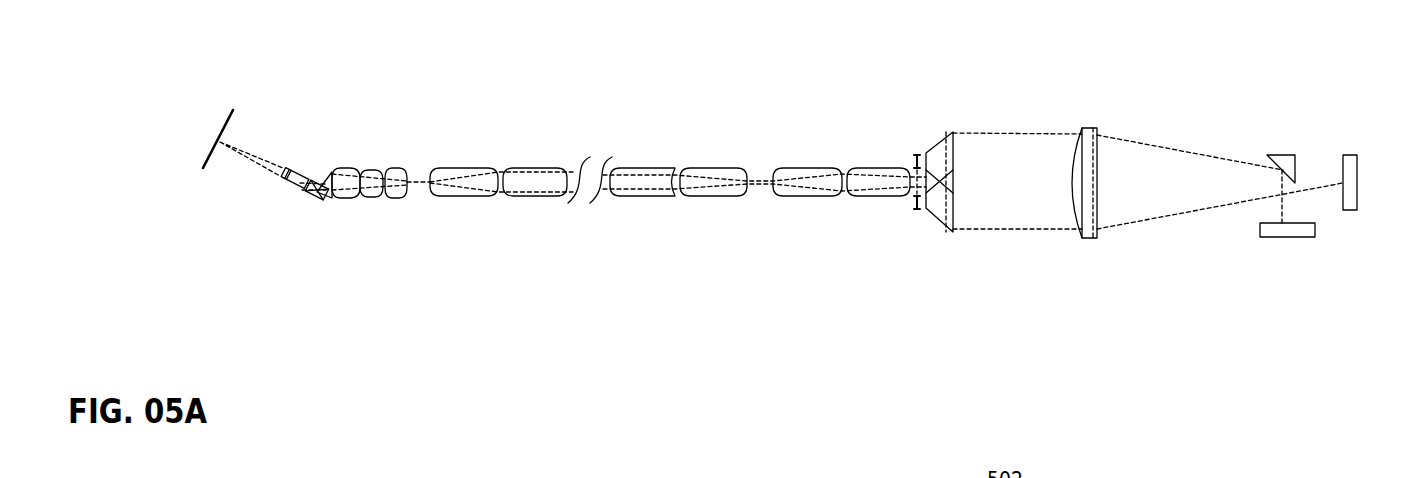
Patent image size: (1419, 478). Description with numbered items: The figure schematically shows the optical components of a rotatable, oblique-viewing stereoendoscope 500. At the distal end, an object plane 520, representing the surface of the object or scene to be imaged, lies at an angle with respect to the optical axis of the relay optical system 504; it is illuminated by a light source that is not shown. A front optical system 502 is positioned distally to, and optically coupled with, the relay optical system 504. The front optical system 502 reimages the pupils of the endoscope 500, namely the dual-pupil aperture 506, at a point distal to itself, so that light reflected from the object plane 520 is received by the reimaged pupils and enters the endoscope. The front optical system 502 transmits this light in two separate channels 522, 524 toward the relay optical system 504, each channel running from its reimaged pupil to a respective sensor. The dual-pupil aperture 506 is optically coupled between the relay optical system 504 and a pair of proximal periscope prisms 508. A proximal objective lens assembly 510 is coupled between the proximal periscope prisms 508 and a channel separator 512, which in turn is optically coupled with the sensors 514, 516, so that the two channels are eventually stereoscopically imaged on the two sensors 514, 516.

The rotatable, oblique-viewing stereoendoscope 500 is at (618, 78).
The front optical system 502 is at (403, 225).
The relay optical system 504 is at (910, 223).
The dual-pupil aperture 506 is at (921, 134).
The proximal periscope prisms 508 is at (935, 223).
The proximal objective lens assembly 510 is at (1088, 242).
The channel separator 512 is at (1288, 153).
The sensor 514 is at (1288, 240).
The sensor 516 is at (1357, 182).
The object plane 520 is at (215, 117).
The channel 522 is at (274, 158).
The channel 524 is at (271, 173).